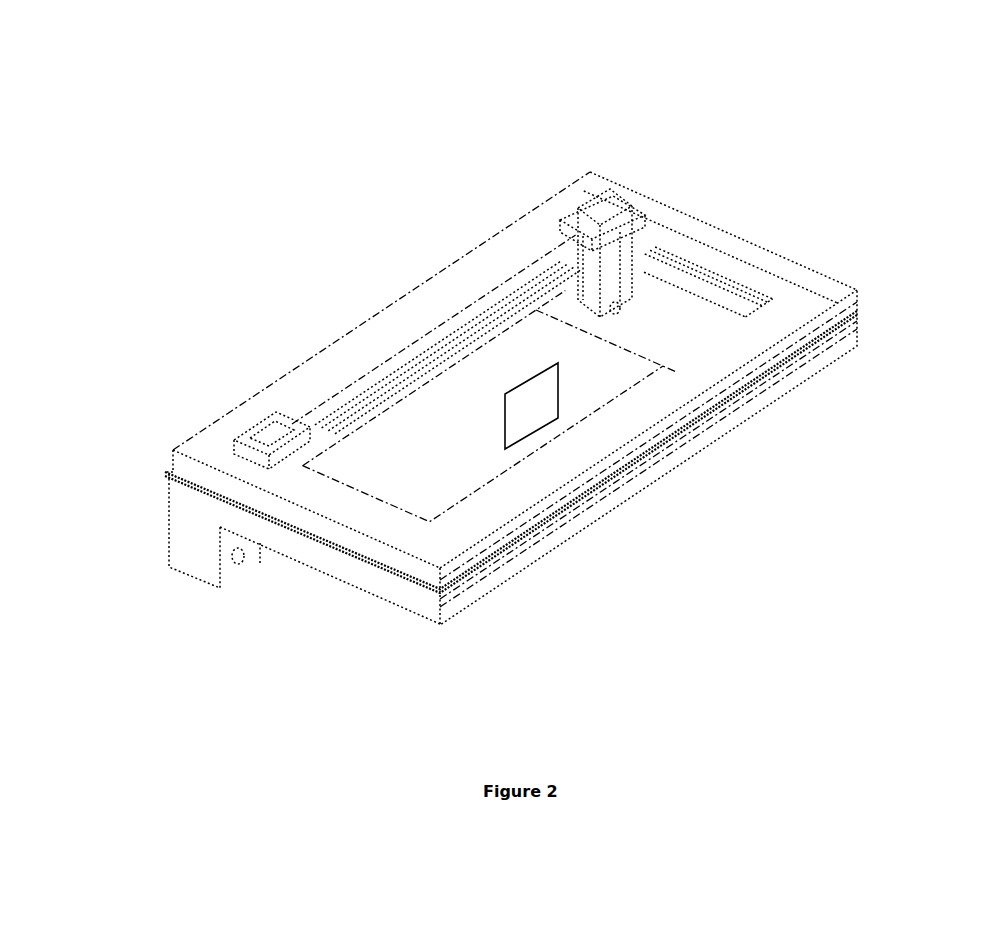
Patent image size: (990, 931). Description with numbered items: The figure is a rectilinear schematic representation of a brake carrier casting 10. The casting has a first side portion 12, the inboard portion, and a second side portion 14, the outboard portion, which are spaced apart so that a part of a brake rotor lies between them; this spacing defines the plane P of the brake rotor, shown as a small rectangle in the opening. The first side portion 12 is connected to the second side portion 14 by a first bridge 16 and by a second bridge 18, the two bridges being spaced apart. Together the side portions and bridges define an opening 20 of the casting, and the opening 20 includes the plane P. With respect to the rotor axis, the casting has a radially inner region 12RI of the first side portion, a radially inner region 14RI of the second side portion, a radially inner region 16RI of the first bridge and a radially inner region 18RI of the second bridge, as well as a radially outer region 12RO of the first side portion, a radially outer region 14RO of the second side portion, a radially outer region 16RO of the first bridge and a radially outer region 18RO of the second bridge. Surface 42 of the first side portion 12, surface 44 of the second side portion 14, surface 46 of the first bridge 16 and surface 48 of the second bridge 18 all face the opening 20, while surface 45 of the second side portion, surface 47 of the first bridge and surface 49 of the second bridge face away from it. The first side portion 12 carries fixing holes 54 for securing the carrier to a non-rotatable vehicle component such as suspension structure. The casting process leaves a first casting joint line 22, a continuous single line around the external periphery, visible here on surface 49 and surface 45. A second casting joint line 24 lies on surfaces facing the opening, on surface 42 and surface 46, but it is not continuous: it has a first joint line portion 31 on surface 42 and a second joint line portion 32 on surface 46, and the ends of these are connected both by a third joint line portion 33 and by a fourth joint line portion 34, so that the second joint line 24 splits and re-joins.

The brake carrier casting 10 is at (350, 140).
The first side portion 12 is at (305, 178).
The radially outer region of the first side portion 12RO is at (383, 310).
The radially inner region of the first side portion 12RI is at (357, 437).
The second side portion 14 is at (690, 452).
The radially outer region of the second side portion 14RO is at (677, 383).
The radially inner region of the second side portion 14RI is at (828, 358).
The first bridge 16 is at (683, 227).
The radially outer region of the first bridge 16RO is at (723, 238).
The radially inner region of the first bridge 16RI is at (678, 303).
The second bridge 18 is at (237, 490).
The radially outer region of the second bridge 18RO is at (217, 457).
The radially inner region of the second bridge 18RI is at (195, 550).
The opening 20 is at (476, 474).
The first casting joint line 22 is at (313, 546).
The second casting joint line 24 is at (430, 378).
The first joint line portion 31 is at (540, 290).
The second joint line portion 32 is at (650, 268).
The third joint line portion 33 is at (600, 205).
The fourth joint line portion 34 is at (582, 292).
The surface of the first side portion facing the opening 42 is at (430, 390).
The surface of the second side portion facing the opening 44 is at (632, 372).
The surface of the second side portion facing away from the opening 45 is at (840, 313).
The surface of the first bridge facing the opening 46 is at (740, 283).
The surface of the first bridge facing away from the opening 47 is at (798, 252).
The surface of the second bridge facing the opening 48 is at (418, 507).
The surface of the second bridge facing away from the opening 49 is at (379, 590).
The fixing holes 54 is at (237, 562).
The plane of the brake rotor P is at (533, 405).